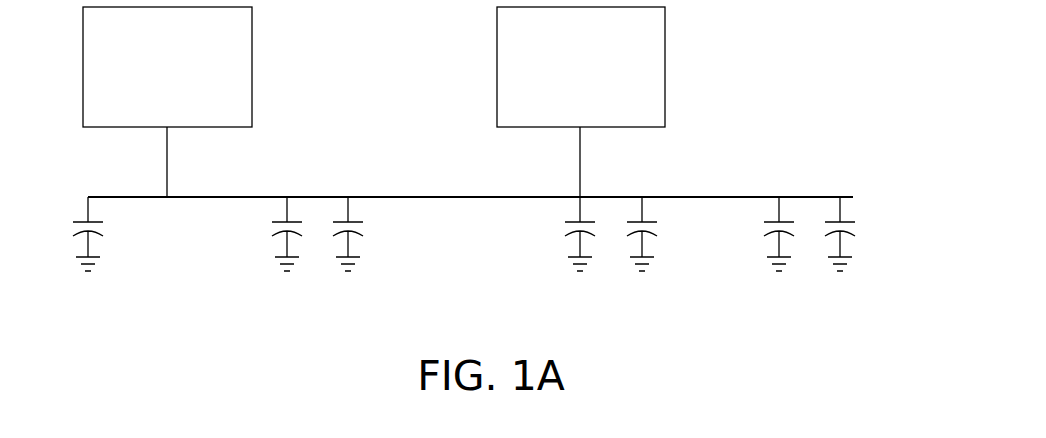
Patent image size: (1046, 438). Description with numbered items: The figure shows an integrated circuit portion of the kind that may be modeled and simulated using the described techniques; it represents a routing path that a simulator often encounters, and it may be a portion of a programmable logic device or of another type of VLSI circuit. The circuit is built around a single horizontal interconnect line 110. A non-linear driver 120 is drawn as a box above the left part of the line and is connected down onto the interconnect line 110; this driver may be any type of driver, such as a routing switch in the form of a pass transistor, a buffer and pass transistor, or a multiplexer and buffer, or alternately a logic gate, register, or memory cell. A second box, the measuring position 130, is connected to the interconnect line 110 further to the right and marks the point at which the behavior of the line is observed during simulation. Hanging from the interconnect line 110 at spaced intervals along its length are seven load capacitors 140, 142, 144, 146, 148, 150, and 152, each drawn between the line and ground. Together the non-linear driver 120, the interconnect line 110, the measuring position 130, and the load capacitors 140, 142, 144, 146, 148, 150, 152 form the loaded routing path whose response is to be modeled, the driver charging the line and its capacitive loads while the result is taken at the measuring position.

The interconnect line 110 is at (710, 197).
The non-linear driver 120 is at (252, 76).
The measuring position 130 is at (497, 72).
The load capacitor 140 is at (102, 234).
The load capacitor 142 is at (273, 234).
The load capacitor 144 is at (362, 233).
The load capacitor 146 is at (566, 233).
The load capacitor 148 is at (656, 233).
The load capacitor 150 is at (767, 233).
The load capacitor 152 is at (845, 232).